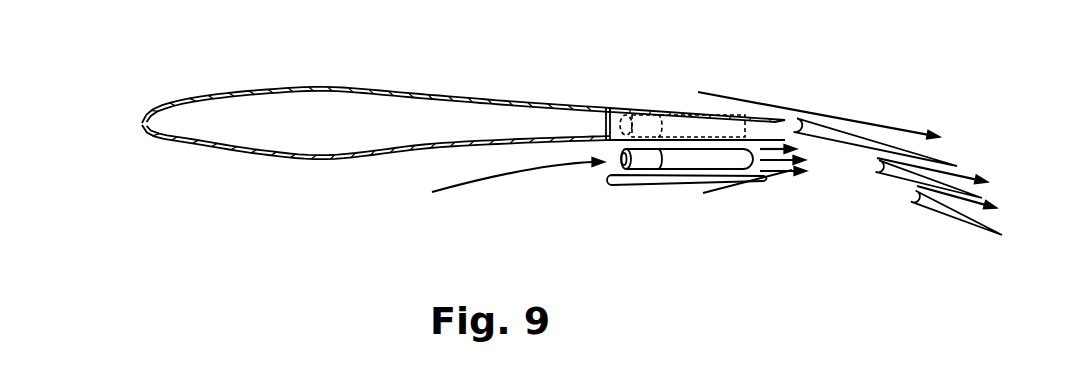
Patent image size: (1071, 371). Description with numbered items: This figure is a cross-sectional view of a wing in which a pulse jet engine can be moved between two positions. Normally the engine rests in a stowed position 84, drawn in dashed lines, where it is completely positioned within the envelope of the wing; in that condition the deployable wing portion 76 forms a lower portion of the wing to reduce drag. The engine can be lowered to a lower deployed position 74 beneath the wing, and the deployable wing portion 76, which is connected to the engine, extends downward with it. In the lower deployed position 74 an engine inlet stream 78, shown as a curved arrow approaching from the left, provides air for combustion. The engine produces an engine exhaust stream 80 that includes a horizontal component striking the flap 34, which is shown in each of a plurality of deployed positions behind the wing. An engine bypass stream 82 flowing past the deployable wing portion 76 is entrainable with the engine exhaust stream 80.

The flap 34 is at (915, 198).
The lower deployed position 74 is at (646, 162).
The deployable wing portion 76 is at (668, 183).
The engine inlet stream 78 is at (502, 173).
The engine exhaust stream 80 is at (796, 160).
The engine bypass stream 82 is at (767, 182).
The stowed position 84 is at (647, 112).